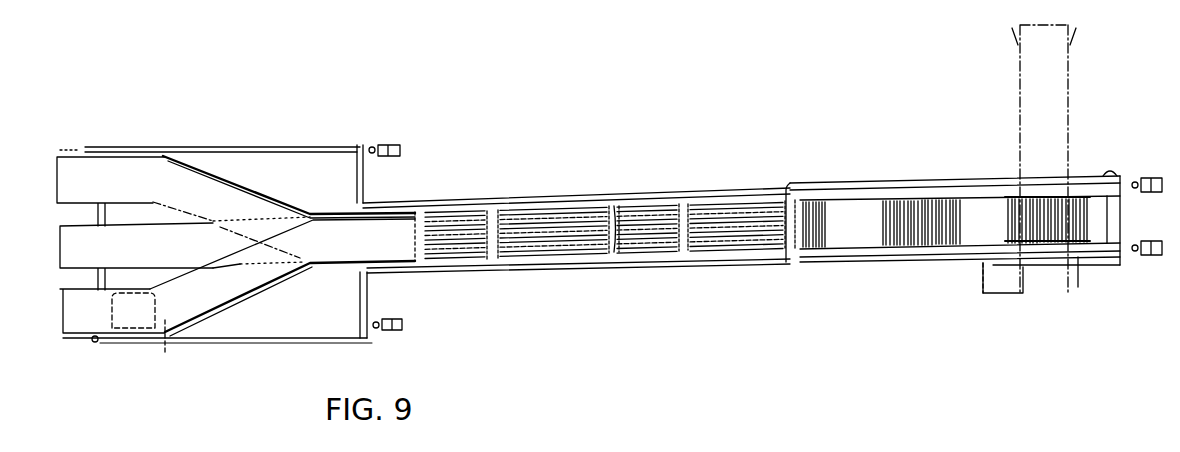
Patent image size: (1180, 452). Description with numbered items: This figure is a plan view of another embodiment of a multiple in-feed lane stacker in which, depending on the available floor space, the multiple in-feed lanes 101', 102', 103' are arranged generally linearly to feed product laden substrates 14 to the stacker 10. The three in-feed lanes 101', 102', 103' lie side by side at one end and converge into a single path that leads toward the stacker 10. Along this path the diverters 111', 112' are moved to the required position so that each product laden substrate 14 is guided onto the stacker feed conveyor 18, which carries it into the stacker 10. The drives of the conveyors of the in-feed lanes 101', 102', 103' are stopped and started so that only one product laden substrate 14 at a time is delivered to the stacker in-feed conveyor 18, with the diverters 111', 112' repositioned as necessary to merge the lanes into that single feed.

The stacker 10 is at (983, 144).
The product laden substrate 14 is at (165, 343).
The stacker feed conveyor 18 is at (743, 257).
The in-feed lane 101' is at (256, 299).
The in-feed lane 102' is at (207, 188).
The in-feed lane 103' is at (251, 161).
The diverter 111' is at (706, 267).
The diverter 112' is at (522, 270).